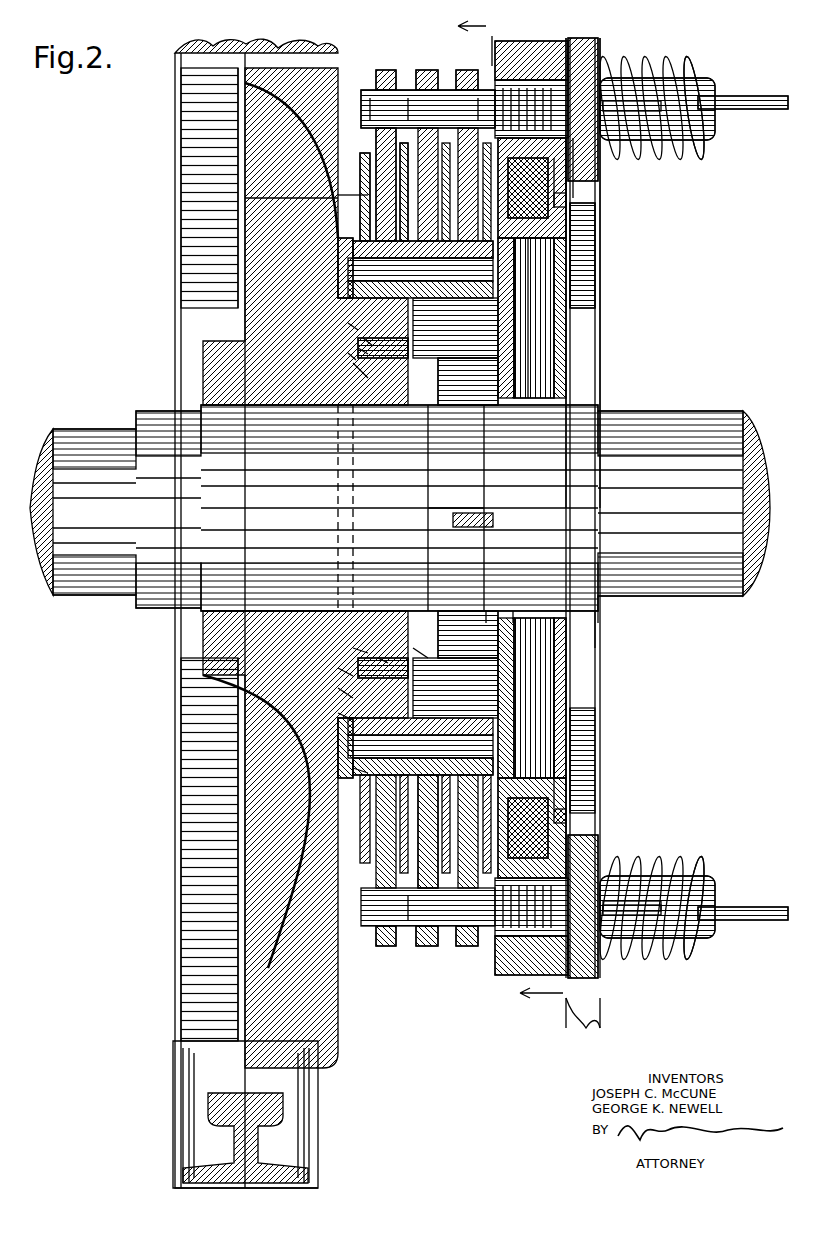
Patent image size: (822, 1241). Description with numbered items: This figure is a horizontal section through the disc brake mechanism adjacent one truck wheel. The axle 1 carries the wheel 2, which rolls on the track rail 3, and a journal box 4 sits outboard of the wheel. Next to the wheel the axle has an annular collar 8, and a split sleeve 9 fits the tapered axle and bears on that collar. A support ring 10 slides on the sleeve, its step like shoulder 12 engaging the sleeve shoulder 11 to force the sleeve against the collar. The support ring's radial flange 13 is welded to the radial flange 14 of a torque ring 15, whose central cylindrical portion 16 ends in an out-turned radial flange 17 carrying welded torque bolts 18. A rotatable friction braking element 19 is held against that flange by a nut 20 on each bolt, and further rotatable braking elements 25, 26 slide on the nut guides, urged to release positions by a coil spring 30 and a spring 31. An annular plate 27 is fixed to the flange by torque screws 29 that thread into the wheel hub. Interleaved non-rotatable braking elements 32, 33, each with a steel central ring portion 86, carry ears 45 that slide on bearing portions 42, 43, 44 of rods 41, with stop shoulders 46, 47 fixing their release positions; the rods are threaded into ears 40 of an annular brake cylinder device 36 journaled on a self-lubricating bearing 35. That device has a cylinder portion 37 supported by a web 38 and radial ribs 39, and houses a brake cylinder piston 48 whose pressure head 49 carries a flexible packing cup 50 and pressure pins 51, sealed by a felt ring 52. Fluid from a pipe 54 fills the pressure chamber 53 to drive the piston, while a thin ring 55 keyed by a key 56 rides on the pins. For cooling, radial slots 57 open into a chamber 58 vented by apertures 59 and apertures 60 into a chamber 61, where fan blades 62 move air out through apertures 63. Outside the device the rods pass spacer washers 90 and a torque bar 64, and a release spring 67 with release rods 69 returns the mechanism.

The axle 1 is at (92, 432).
The wheels 2 is at (167, 966).
The track rails 3 is at (205, 1096).
The journal box 4 is at (578, 992).
The annular collar 8 is at (428, 421).
The split sleeve 9 is at (455, 482).
The support ring 10 is at (600, 603).
The shoulder 11 is at (487, 603).
The step like shoulder 12 is at (517, 603).
The radial flange 13 is at (355, 640).
The radial flange 14 is at (375, 652).
The torque ring 15 is at (340, 668).
The central cylindrical portion 16 is at (362, 702).
The radial flange 17 is at (350, 762).
The torque bolt 18 is at (352, 238).
The rotatable friction braking element 19 is at (332, 165).
The nut 20 is at (556, 292).
The rotatable friction braking element 25 is at (368, 135).
The rotatable friction braking element 26 is at (381, 109).
The annular plate 27 is at (530, 306).
The torque screws 29 is at (365, 356).
The coil spring 30 is at (333, 708).
The spring 31 is at (355, 346).
The non-rotatable friction braking element 32 is at (360, 187).
The non-rotatable friction braking element 33 is at (291, 198).
The self-lubricating bearing 35 is at (592, 620).
The brake cylinder device 36 is at (546, 661).
The cylinder portion 37 is at (570, 786).
The web 38 is at (530, 742).
The radial ribs 39 is at (546, 762).
The ears 40 is at (495, 125).
The rod 41 is at (688, 80).
The bearing portion 42 is at (474, 505).
The bearing portion 43 is at (420, 910).
The bearing portion 44 is at (360, 100).
The ears 45 is at (366, 958).
The stop shoulder 46 is at (368, 72).
The stop shoulder 47 is at (417, 500).
The brake cylinder piston 48 is at (540, 782).
The pressure head 49 is at (562, 170).
The flexible packing cup 50 is at (590, 229).
The pressure pins 51 is at (565, 201).
The felt ring 52 is at (565, 252).
The pressure chamber 53 is at (572, 181).
The pipe 54 is at (552, 192).
The thin ring 55 is at (498, 135).
The key 56 is at (345, 352).
The radial slots 57 is at (322, 820).
The chamber 58 is at (360, 336).
The apertures 59 is at (348, 321).
The apertures 60 is at (395, 352).
The chamber 61 is at (500, 346).
The fan blades 62 is at (500, 366).
The apertures 63 is at (515, 322).
The torque bar 64 is at (578, 1008).
The release spring 67 is at (680, 150).
The release rods 69 is at (727, 88).
The central ring portion 86 is at (372, 832).
The spacer washers 90 is at (566, 46).